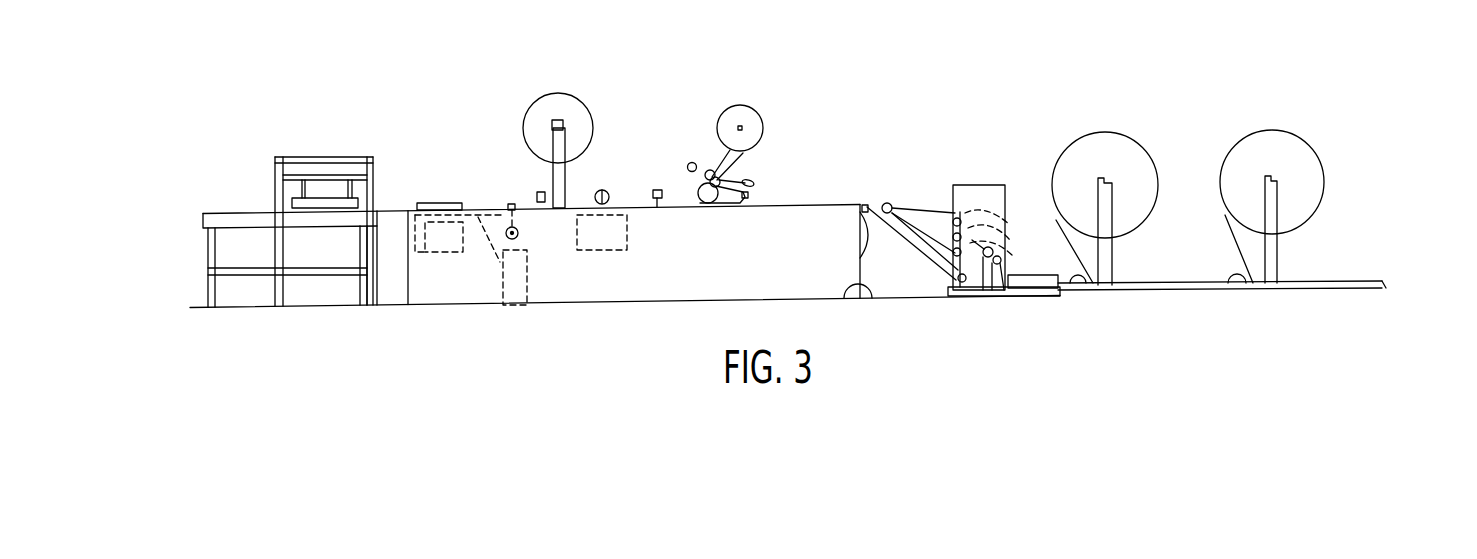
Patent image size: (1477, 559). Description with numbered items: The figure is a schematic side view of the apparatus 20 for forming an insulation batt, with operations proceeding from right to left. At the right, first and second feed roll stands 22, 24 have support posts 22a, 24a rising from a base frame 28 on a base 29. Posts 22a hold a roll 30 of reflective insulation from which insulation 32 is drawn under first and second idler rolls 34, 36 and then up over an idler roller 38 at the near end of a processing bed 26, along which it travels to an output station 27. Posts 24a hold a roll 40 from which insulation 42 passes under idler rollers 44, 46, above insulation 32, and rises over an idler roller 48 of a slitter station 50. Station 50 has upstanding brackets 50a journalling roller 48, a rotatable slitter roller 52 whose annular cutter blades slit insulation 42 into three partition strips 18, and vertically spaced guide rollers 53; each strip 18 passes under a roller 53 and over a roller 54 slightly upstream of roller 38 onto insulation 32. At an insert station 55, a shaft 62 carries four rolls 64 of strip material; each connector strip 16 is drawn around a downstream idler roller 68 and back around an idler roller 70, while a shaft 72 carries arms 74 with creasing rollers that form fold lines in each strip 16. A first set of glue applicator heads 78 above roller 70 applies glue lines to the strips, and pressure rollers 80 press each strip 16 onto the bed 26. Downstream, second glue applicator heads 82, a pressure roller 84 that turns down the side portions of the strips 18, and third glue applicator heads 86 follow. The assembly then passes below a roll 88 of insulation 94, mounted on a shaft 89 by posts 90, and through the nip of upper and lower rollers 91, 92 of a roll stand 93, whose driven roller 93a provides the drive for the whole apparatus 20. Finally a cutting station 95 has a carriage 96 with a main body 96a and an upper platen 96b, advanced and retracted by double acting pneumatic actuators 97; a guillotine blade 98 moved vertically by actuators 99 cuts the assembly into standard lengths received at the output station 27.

The connector strip 16 is at (707, 170).
The partition strip 18 is at (946, 212).
The apparatus 20 is at (847, 143).
The first feed roll stand 22 is at (1297, 244).
The support posts 22a is at (1280, 270).
The second feed roll stand 24 is at (1134, 246).
The support posts 24a is at (1117, 267).
The processing bed 26 is at (647, 273).
The output station 27 is at (333, 128).
The base frame 28 is at (1367, 282).
The base 29 is at (849, 300).
The roll of reflective insulation 30 is at (1267, 142).
The insulation 32 is at (925, 250).
The first idler roll 34 is at (1232, 286).
The second idler roll 36 is at (963, 300).
The idler roller 38 is at (860, 250).
The roll of reflective insulation 40 is at (1117, 143).
The insulation 42 is at (1073, 285).
The idler roller 44 is at (1100, 288).
The idler roller 46 is at (1050, 303).
The idler roller 48 is at (1010, 293).
The slitter station 50 is at (982, 137).
The brackets 50a is at (990, 188).
The slitter roller 52 is at (985, 293).
The guide rollers 53 is at (1010, 243).
The roller 54 is at (884, 205).
The insert station 55 is at (712, 92).
The shaft 62 is at (738, 105).
The rolls of strip material 64 is at (760, 120).
The downstream idler roller 68 is at (752, 180).
The idler roller 70 is at (747, 206).
The shaft 72 is at (688, 165).
The arms 74 is at (688, 169).
The glue applicator head 78 is at (756, 183).
The pressure roller 80 is at (708, 206).
The glue applicator head 82 is at (657, 207).
The pressure roller 84 is at (601, 190).
The glue applicator head 86 is at (540, 192).
The roll 88 is at (543, 110).
The shaft 89 is at (560, 95).
The posts 90 is at (565, 140).
The upper roller 91 is at (512, 200).
The lower roller 92 is at (528, 220).
The roll stand 93 is at (503, 217).
The driven roller 93a is at (518, 238).
The insulation 94 is at (513, 200).
The cutting station 95 is at (433, 195).
The carriage 96 is at (466, 246).
The main body 96a is at (445, 253).
The upper platen 96b is at (452, 205).
The double acting pneumatic actuators 97 is at (520, 262).
The guillotine blade 98 is at (410, 207).
The double acting pneumatic actuators 99 is at (417, 252).